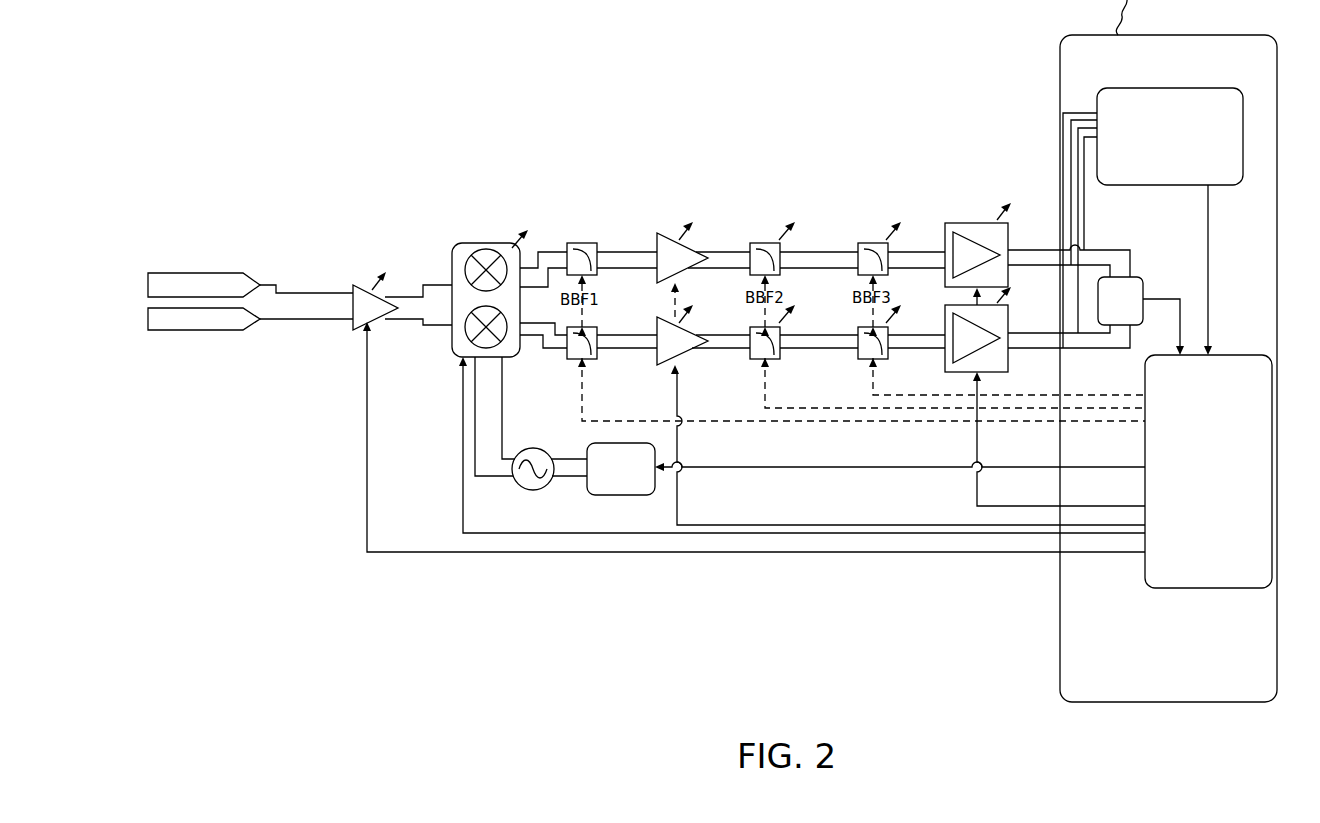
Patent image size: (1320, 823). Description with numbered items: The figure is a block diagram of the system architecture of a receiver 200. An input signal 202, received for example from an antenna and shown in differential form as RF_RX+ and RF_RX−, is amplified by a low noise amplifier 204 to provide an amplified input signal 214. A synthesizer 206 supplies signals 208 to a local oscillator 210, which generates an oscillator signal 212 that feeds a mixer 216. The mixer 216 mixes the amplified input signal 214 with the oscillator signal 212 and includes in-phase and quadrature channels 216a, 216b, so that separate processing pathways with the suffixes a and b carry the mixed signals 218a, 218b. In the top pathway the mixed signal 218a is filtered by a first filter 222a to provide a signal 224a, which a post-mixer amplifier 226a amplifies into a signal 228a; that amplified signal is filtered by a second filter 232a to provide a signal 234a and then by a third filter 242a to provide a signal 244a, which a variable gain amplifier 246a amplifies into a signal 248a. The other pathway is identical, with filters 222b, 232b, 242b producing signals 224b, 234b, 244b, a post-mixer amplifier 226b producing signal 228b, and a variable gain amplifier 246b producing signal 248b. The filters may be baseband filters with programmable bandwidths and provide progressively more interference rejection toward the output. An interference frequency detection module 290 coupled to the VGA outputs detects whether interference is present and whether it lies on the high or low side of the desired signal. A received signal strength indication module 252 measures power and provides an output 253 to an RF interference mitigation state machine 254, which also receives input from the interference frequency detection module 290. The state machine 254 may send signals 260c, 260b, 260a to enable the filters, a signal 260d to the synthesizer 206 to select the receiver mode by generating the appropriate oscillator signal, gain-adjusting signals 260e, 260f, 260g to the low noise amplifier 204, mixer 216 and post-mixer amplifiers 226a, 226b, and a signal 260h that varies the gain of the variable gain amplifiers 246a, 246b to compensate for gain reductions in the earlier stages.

The receiver 200 is at (296, 94).
The input signal 202 is at (305, 293).
The low noise amplifier (LNA) 204 is at (362, 279).
The synthesizer 206 is at (595, 496).
The signals from synthesizer 208 is at (561, 458).
The local oscillator 210 is at (518, 451).
The oscillator signal 212 is at (503, 393).
The amplified input signal 214 is at (400, 293).
The mixer 216 is at (466, 286).
The in-phase channel of mixer 216a is at (478, 243).
The quadrature channel of mixer 216b is at (456, 352).
The mixed signal 218a is at (530, 266).
The mixed signal 218b is at (537, 337).
The filter 222a is at (596, 277).
The filter 222b is at (598, 360).
The filtered signal 224a is at (596, 248).
The filtered signal 224b is at (596, 332).
The post-mixer amplifier (PMA) 226a is at (662, 233).
The post-mixer amplifier (PMA) 226b is at (660, 366).
The amplified signal 228a is at (730, 250).
The amplified signal 228b is at (712, 350).
The filter 232a is at (772, 277).
The filter 232b is at (770, 360).
The filtered signal 234a is at (832, 250).
The filtered signal 234b is at (822, 350).
The filter 242a is at (880, 277).
The filter 242b is at (878, 360).
The filtered signal 244a is at (913, 246).
The filtered signal 244b is at (926, 350).
The variable gain amplifier (VGA) 246a is at (972, 223).
The variable gain amplifier (VGA) 246b is at (1005, 372).
The amplified signal 248a is at (1027, 248).
The amplified signal 248b is at (1027, 332).
The received signal strength indication (RSSI) module 252 is at (1141, 316).
The RSSI output 253 is at (1210, 250).
The RF interference mitigation state machine 254 is at (1222, 502).
The filter enable signal 260a is at (907, 410).
The filter enable signal 260b is at (933, 410).
The filter enable signal 260c is at (1032, 422).
The synthesizer control signal 260d is at (748, 468).
The LNA gain control signal 260e is at (918, 553).
The mixer gain control signal 260f is at (953, 534).
The PMA gain control signal 260g is at (1013, 528).
The VGA gain control signal 260h is at (1093, 506).
The interference frequency detection (IFD) module 290 is at (1198, 88).